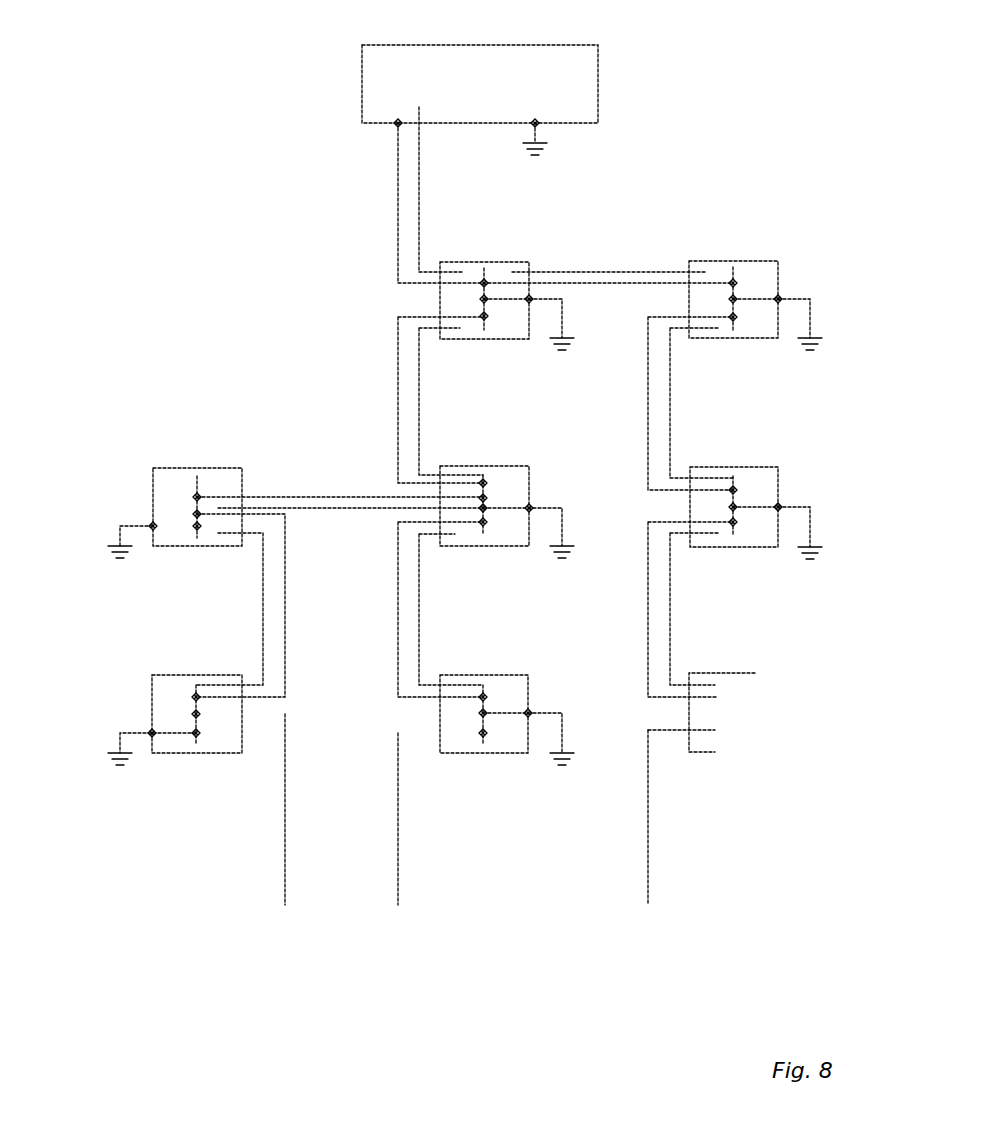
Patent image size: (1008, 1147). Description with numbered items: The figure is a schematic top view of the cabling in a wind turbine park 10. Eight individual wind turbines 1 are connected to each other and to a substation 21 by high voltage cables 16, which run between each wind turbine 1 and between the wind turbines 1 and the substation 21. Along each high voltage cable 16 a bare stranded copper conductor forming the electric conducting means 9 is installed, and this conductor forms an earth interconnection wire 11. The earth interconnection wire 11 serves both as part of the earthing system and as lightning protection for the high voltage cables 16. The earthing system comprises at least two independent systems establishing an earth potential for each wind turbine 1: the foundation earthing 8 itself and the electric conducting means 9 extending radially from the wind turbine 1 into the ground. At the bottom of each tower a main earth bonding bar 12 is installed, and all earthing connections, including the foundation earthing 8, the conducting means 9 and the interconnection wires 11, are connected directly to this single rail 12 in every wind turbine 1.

The wind turbine 1 is at (443, 485).
The foundation earthing 8 is at (562, 357).
The electric conducting means 9 is at (392, 222).
The wind turbine park 10 is at (226, 323).
The earth interconnection wire 11 is at (329, 495).
The main earth bonding bar 12 is at (200, 485).
The high voltage cable 16 is at (573, 271).
The substation 21 is at (452, 78).